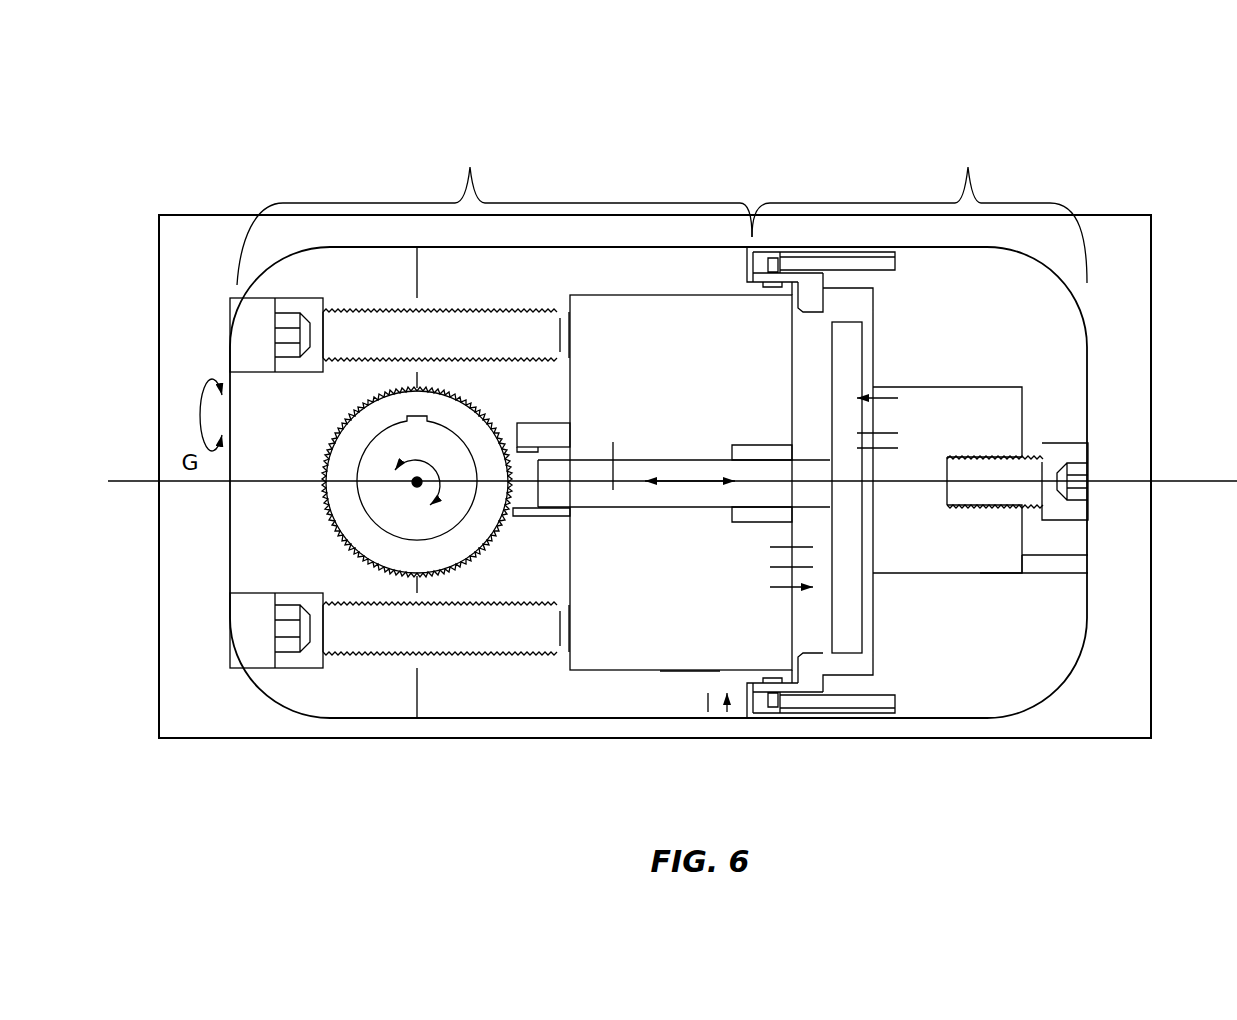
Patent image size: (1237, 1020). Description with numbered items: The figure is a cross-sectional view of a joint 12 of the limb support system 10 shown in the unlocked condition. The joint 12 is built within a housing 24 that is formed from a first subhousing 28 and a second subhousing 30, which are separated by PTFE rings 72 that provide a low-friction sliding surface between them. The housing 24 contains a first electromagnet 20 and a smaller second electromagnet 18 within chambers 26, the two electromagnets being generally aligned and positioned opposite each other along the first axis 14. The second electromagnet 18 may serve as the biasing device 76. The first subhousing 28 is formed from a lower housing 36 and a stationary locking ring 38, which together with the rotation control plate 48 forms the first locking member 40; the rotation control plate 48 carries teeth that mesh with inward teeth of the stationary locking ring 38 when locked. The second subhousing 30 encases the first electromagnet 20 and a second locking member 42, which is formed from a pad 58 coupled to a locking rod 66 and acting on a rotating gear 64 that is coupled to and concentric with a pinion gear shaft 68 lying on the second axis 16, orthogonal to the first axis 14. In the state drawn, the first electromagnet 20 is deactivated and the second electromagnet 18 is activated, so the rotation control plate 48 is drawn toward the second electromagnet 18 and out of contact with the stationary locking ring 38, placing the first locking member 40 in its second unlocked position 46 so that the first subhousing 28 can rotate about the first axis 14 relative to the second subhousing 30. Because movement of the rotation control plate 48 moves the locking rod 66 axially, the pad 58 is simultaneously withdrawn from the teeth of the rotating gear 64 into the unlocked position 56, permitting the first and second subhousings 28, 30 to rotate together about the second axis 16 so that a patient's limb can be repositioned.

The limb support system 10 is at (687, 107).
The joint 12 is at (845, 107).
The first axis 14 is at (1182, 480).
The second axis 16 is at (412, 490).
The second electromagnet 18 is at (975, 573).
The first electromagnet 20 is at (625, 671).
The housing 24 is at (368, 718).
The chambers 26 is at (687, 671).
The first subhousing 28 is at (919, 211).
The second subhousing 30 is at (494, 212).
The lower housing 36 is at (930, 718).
The stationary locking ring 38 is at (773, 713).
The first locking member 40 is at (932, 362).
The second locking member 42 is at (315, 417).
The second unlocked position 46 is at (845, 750).
The rotation control plate 48 is at (847, 597).
The unlocked position 56 is at (480, 752).
The pad 58 is at (520, 505).
The rotating gear 64 is at (348, 463).
The locking rod 66 is at (613, 442).
The pinion gear shaft 68 is at (412, 522).
The PTFE rings 72 is at (748, 718).
The biasing device 76 is at (935, 610).